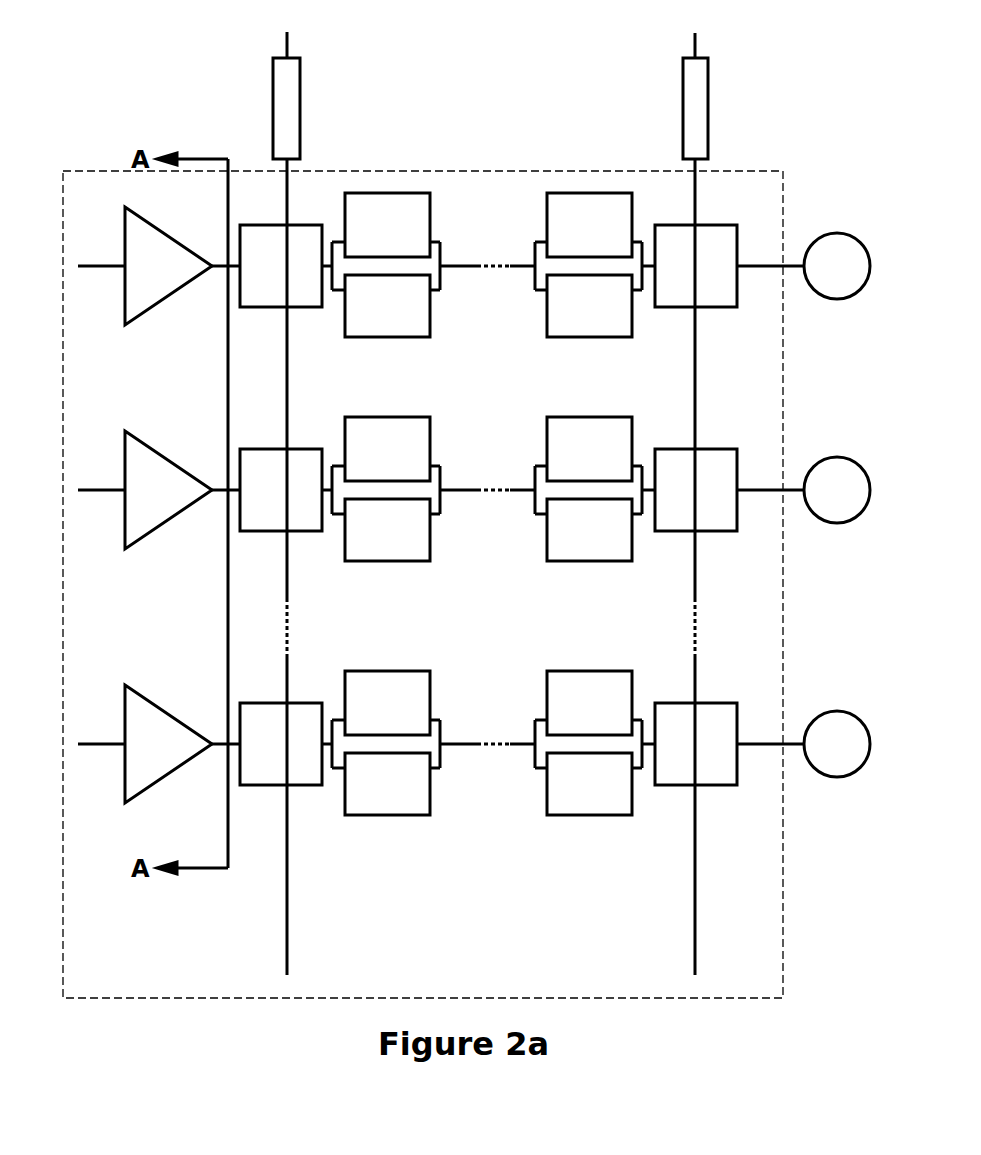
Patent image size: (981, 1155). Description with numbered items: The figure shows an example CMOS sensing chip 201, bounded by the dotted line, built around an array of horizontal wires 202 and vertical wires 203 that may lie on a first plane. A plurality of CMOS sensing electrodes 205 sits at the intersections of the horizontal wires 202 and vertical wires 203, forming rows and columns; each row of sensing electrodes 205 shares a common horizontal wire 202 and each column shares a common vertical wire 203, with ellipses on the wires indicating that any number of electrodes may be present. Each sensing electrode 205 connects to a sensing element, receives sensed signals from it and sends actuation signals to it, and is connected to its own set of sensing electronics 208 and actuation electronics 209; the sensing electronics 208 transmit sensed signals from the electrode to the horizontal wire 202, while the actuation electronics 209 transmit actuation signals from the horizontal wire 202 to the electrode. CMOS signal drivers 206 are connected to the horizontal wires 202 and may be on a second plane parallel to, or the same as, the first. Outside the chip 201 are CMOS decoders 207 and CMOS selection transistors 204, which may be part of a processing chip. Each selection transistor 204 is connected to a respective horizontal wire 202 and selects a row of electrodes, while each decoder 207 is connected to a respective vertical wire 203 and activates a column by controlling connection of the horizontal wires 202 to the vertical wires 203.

The CMOS sensing chip 201 is at (462, 168).
The horizontal wires 202 is at (474, 282).
The vertical wires 203 is at (276, 46).
The CMOS selection transistors 204 is at (803, 505).
The CMOS sensing electrodes 205 is at (488, 505).
The CMOS signal drivers 206 is at (159, 505).
The CMOS decoders 207 is at (490, 108).
The sensing electronics 208 is at (488, 464).
The actuation electronics 209 is at (488, 545).